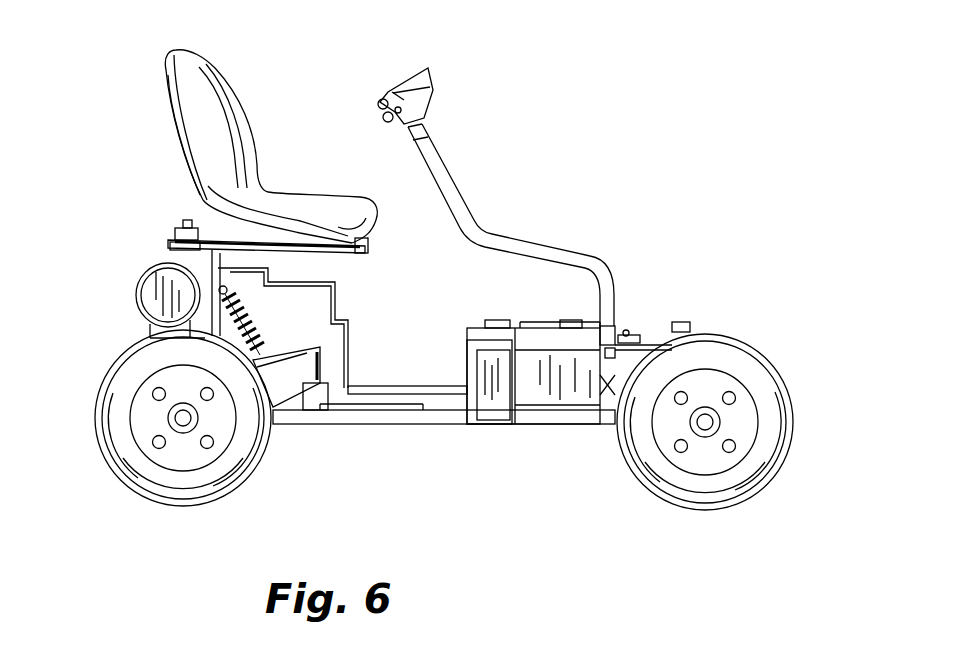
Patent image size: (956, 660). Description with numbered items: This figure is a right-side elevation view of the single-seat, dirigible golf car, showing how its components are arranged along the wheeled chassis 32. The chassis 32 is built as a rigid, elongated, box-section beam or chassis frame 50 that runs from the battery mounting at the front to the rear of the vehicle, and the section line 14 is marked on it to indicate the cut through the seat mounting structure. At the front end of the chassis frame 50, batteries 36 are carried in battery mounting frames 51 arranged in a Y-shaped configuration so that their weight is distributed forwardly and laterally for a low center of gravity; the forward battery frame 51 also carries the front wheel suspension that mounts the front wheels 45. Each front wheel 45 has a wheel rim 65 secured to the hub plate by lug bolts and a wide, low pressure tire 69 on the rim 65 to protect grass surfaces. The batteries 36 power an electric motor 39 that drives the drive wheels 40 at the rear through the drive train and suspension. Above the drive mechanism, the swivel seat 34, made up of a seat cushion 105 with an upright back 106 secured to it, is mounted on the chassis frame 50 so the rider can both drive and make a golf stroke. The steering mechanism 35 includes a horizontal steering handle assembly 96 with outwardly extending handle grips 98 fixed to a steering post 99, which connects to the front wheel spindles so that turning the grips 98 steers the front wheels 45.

The section line 14- 14 is at (207, 362).
The wheeled chassis 32 is at (377, 387).
The swivel seat 34 is at (207, 103).
The steering mechanism 35 is at (534, 203).
The battery 36 is at (537, 397).
The electric motor 39 is at (160, 302).
The drive wheel 40 is at (148, 498).
The front wheel 45 is at (745, 401).
The chassis frame 50 is at (440, 403).
The battery mounting frame 51 is at (488, 425).
The wheel rim 65 is at (743, 427).
The tire 69 is at (740, 357).
The steering handle assembly 96 is at (418, 110).
The handle grip 98 is at (388, 107).
The steering post 99 is at (438, 178).
The seat cushion 105 is at (322, 212).
The upright back 106 is at (177, 152).